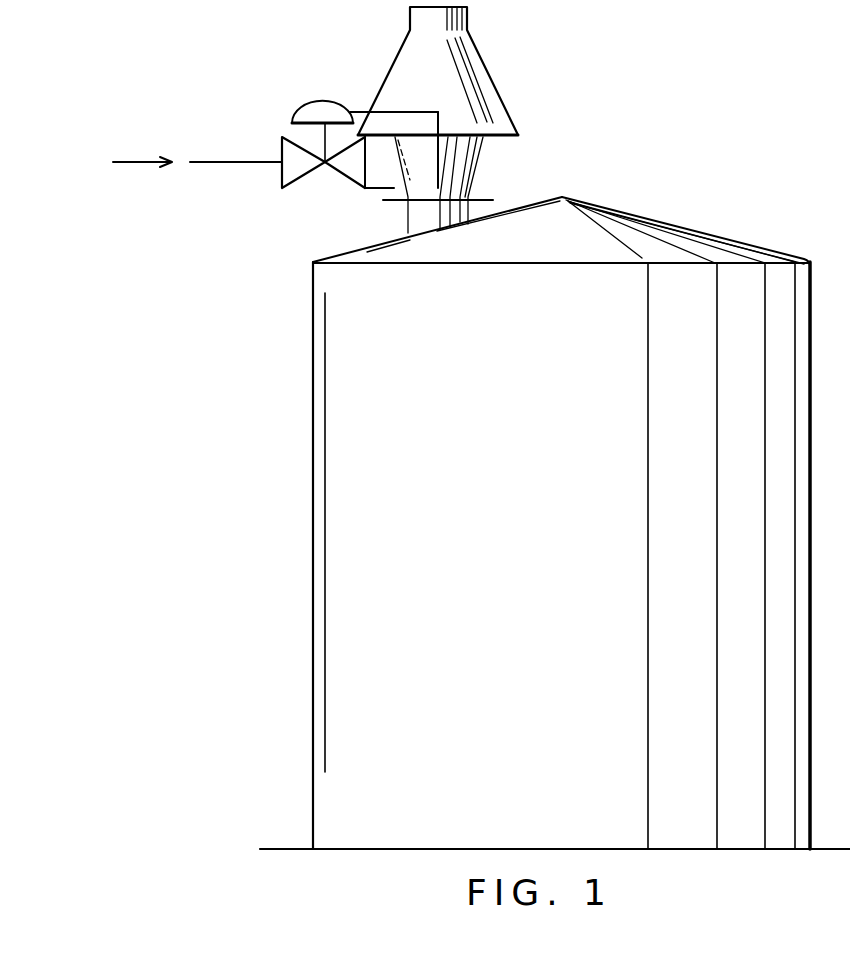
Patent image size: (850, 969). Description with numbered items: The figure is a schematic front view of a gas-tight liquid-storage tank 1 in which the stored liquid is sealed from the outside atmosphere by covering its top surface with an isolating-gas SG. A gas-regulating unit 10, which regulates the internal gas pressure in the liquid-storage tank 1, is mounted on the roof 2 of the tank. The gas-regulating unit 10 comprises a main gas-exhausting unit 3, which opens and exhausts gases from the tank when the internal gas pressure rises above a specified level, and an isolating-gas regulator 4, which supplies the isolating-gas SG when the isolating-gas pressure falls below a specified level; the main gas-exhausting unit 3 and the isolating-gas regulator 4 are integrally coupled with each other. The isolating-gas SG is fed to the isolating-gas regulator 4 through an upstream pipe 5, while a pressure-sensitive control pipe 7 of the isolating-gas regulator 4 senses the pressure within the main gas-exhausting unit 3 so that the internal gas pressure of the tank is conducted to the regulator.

The liquid-storage tank 1 is at (313, 502).
The roof 2 is at (606, 208).
The main gas-exhausting unit 3 is at (433, 180).
The isolating-gas regulator 4 is at (315, 100).
The upstream pipe 5 is at (250, 165).
The control pipe 7 is at (433, 112).
The gas-regulating unit 10 is at (512, 172).
The isolating-gas SG is at (138, 162).